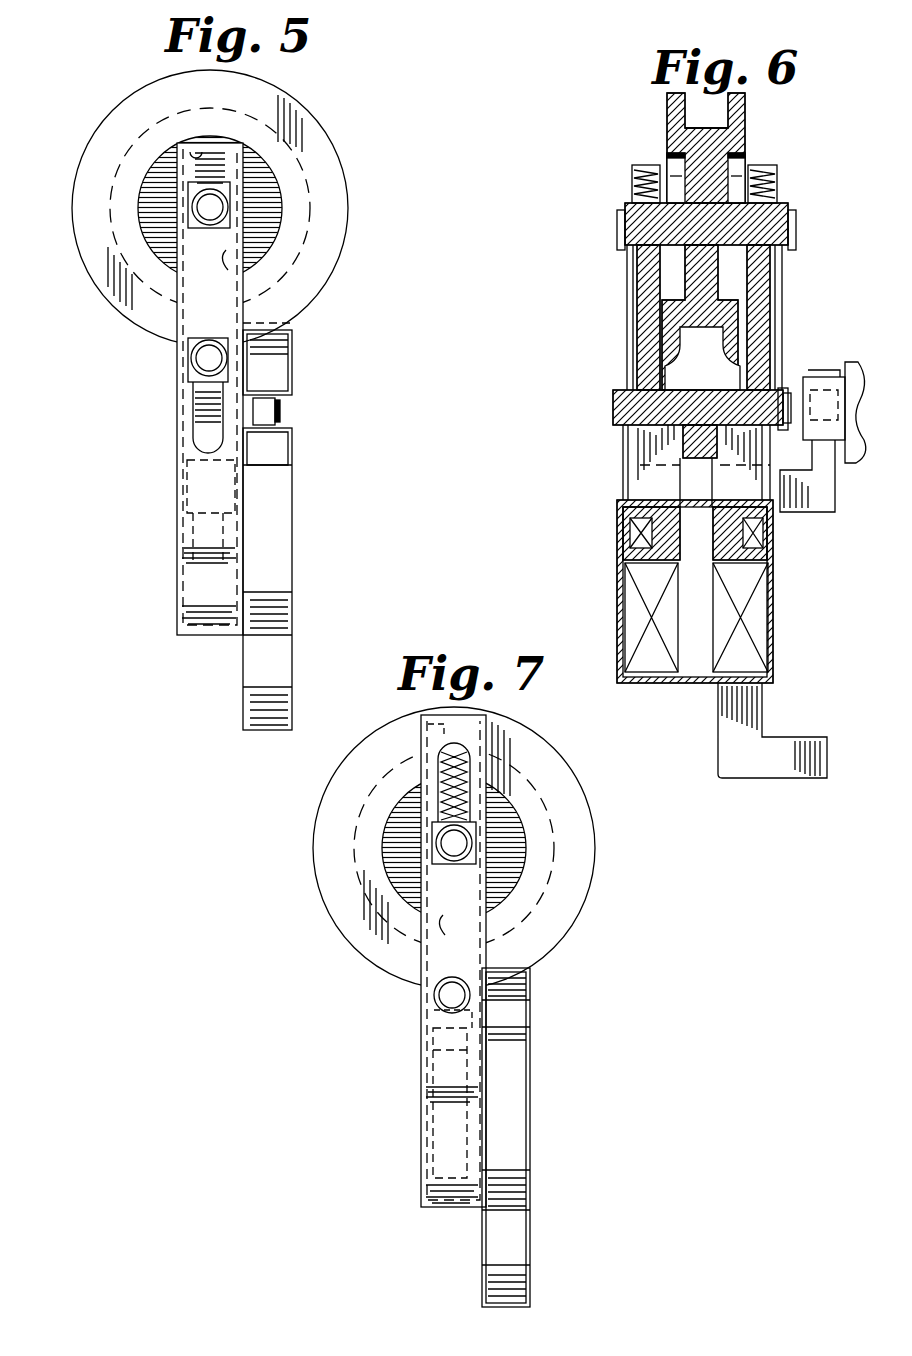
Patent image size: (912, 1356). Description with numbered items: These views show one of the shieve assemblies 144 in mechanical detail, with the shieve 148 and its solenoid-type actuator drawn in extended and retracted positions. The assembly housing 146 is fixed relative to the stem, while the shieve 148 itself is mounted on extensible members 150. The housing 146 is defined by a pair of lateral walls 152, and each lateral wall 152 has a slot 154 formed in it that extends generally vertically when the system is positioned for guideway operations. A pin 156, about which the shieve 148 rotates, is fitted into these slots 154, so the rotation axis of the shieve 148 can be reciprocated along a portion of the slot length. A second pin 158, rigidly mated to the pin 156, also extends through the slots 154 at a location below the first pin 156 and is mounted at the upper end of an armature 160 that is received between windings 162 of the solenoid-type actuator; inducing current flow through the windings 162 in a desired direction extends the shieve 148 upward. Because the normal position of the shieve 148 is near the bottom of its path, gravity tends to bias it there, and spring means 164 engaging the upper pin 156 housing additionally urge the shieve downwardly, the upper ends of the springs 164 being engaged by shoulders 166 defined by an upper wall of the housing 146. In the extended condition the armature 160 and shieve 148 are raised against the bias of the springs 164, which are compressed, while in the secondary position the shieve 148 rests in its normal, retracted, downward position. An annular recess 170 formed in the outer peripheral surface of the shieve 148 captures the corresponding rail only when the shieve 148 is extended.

In FIG. 5, the shieve assembly 144 is at (357, 156).
In FIG. 6, the shieve assembly 144 is at (806, 242).
In FIG. 7, the shieve assembly 144 is at (611, 837).
In FIG. 5, the assembly housing 146 is at (178, 362).
In FIG. 6, the assembly housing 146 is at (786, 197).
In FIG. 7, the assembly housing 146 is at (421, 1009).
In FIG. 5, the shieve 148 is at (128, 103).
In FIG. 6, the shieve 148 is at (667, 135).
In FIG. 7, the shieve 148 is at (378, 741).
In FIG. 5, the extensible member 150 is at (275, 381).
In FIG. 6, the extensible member 150 is at (693, 448).
In FIG. 7, the extensible member 150 is at (520, 1020).
In FIG. 5, the lateral wall 152 is at (185, 442).
In FIG. 6, the lateral wall 152 is at (627, 362).
In FIG. 7, the lateral wall 152 is at (421, 976).
In FIG. 5, the slot 154 is at (226, 270).
In FIG. 6, the slot 154 is at (634, 258).
In FIG. 7, the slot 154 is at (445, 935).
In FIG. 5, the pin 156 is at (212, 205).
In FIG. 6, the pin 156 is at (632, 227).
In FIG. 7, the pin 156 is at (460, 843).
In FIG. 5, the second pin 158 is at (205, 370).
In FIG. 6, the second pin 158 is at (668, 428).
In FIG. 7, the second pin 158 is at (500, 974).
In FIG. 5, the armature 160 is at (283, 413).
In FIG. 6, the armature 160 is at (700, 570).
In FIG. 6, the windings 162 is at (652, 638).
In FIG. 5, the spring means 164 is at (222, 148).
In FIG. 6, the spring means 164 is at (636, 183).
In FIG. 7, the spring means 164 is at (466, 754).
In FIG. 5, the shoulder 166 is at (196, 146).
In FIG. 6, the shoulder 166 is at (672, 162).
In FIG. 7, the shoulder 166 is at (425, 727).
In FIG. 6, the annular recess 170 is at (736, 112).